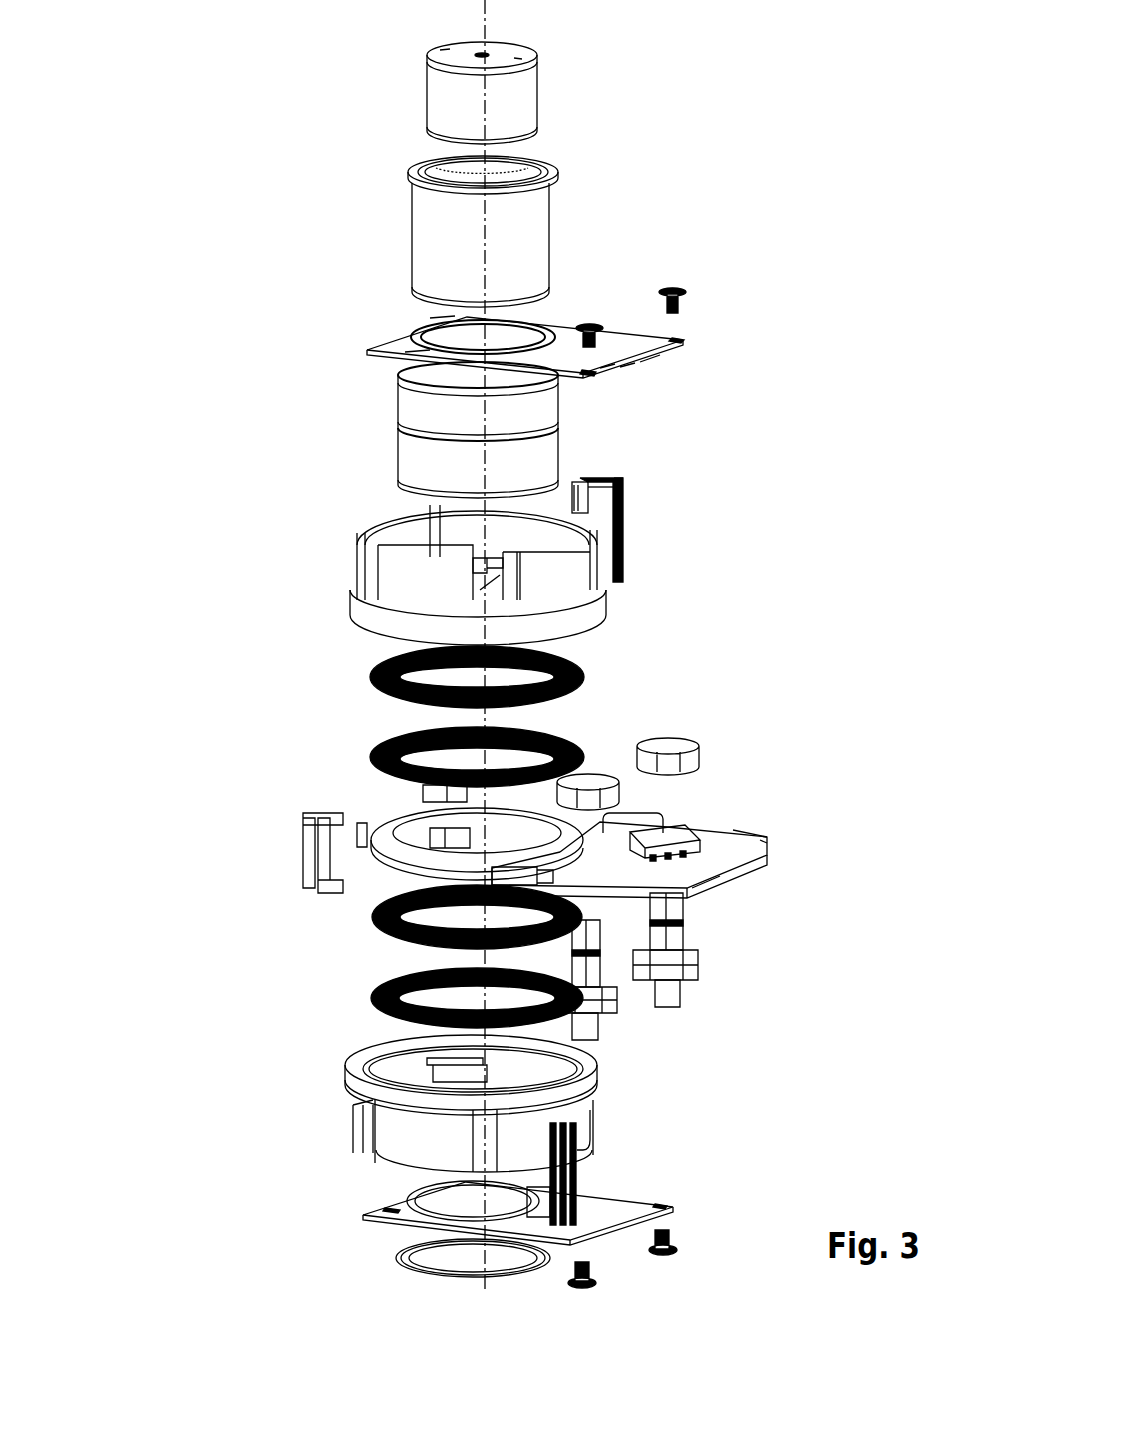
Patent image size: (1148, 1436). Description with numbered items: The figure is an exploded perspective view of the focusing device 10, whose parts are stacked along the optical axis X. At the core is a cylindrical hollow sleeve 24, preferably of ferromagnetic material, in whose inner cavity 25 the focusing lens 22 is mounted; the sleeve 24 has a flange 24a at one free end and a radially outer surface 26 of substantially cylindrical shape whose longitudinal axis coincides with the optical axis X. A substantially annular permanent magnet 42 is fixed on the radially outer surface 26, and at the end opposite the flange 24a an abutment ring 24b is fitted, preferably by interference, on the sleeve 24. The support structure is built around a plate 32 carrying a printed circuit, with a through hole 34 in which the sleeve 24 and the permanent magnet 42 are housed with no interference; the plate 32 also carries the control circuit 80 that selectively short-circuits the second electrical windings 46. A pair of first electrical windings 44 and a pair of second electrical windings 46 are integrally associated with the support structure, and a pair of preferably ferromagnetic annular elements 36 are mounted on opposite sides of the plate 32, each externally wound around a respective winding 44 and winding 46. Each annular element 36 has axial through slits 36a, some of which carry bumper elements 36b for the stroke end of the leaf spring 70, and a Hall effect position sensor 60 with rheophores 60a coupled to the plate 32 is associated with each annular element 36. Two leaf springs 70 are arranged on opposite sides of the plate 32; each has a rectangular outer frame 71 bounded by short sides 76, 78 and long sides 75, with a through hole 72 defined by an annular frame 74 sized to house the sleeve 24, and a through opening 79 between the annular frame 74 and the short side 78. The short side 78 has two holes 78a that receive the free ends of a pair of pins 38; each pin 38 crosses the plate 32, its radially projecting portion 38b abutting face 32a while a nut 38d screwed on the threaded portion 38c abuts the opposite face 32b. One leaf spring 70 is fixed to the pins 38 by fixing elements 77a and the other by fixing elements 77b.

The focusing device 10 is at (173, 153).
The optical axis X is at (490, 17).
The focusing lens 22 is at (541, 103).
The sleeve 24 is at (509, 153).
The flange 24a is at (412, 163).
The abutment ring 24b is at (397, 1258).
The inner cavity 25 is at (460, 172).
The radially outer surface 26 is at (548, 207).
The plate 32 is at (692, 858).
The face 32a is at (705, 890).
The opposite face 32b is at (733, 828).
The through hole 34 is at (413, 832).
The annular element 36 is at (427, 844).
The axial through slit 36a is at (497, 588).
The bumper element 36b is at (307, 820).
The pin 38 is at (716, 1004).
The radially projecting portion 38b is at (687, 933).
The externally threaded portion 38c is at (682, 965).
The nut 38d is at (585, 777).
The permanent magnet 42 is at (330, 467).
The first electrical winding 44 is at (370, 672).
The second electrical winding 46 is at (370, 753).
The position sensor 60 is at (670, 851).
The rheophore 60a is at (623, 493).
The leaf spring 70 is at (532, 722).
The outer frame 71 is at (620, 330).
The through hole 72 is at (448, 338).
The annular frame 74 is at (610, 367).
The long side 75 is at (545, 323).
The short side 76 is at (415, 352).
The first fixing element 77a is at (680, 339).
The second fixing element 77b is at (680, 1250).
The short side 78 is at (627, 367).
The hole 78a is at (694, 332).
The through opening 79 is at (660, 357).
The control circuit 80 is at (763, 842).